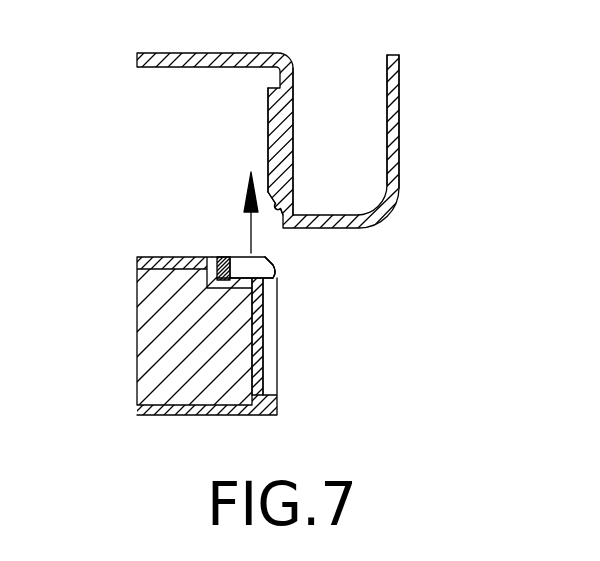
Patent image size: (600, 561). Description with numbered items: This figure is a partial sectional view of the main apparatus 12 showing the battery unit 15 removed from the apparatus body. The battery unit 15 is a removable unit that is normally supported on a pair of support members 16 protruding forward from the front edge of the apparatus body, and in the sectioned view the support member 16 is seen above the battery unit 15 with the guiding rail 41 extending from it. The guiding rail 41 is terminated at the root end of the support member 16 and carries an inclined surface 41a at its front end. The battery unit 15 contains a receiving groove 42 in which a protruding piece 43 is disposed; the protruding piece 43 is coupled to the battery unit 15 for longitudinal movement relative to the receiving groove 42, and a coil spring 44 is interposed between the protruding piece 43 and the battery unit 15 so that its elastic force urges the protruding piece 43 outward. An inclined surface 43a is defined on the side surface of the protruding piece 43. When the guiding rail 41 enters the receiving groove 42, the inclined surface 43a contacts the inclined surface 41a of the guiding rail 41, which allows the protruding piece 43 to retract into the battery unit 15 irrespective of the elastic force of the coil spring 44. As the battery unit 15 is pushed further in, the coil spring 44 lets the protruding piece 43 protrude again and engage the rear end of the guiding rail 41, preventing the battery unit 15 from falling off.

The main apparatus 12 is at (405, 105).
The battery unit 15 is at (224, 413).
The support member 16 is at (256, 68).
The guiding rail 41 is at (268, 163).
The inclined surface 41a is at (284, 211).
The receiving groove 42 is at (270, 394).
The protruding piece 43 is at (271, 279).
The inclined surface 43a is at (273, 261).
The coil spring 44 is at (227, 266).